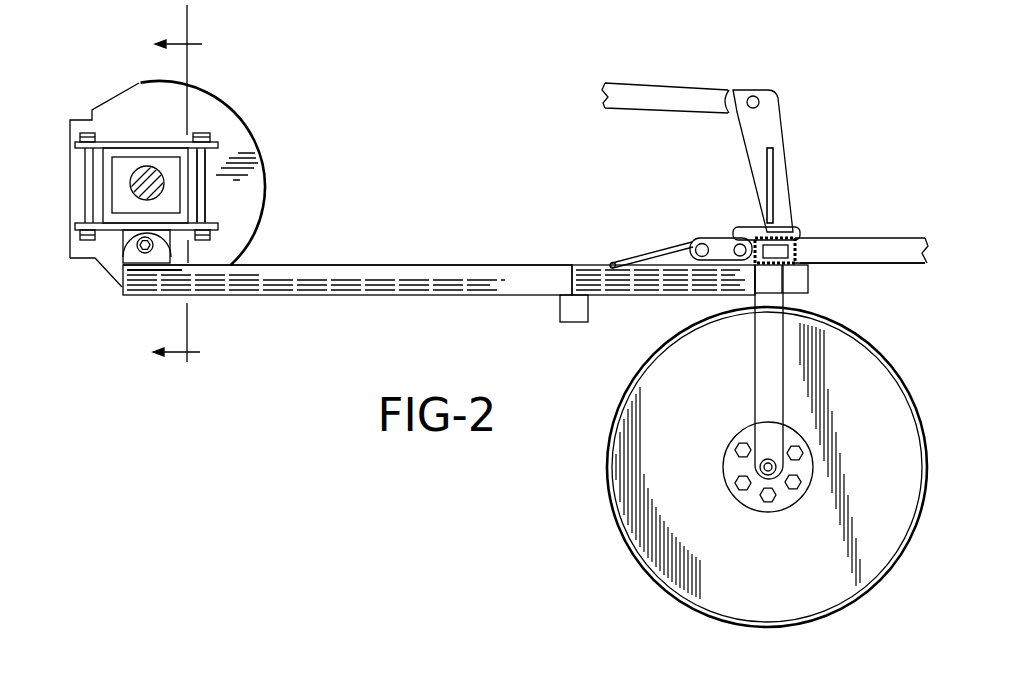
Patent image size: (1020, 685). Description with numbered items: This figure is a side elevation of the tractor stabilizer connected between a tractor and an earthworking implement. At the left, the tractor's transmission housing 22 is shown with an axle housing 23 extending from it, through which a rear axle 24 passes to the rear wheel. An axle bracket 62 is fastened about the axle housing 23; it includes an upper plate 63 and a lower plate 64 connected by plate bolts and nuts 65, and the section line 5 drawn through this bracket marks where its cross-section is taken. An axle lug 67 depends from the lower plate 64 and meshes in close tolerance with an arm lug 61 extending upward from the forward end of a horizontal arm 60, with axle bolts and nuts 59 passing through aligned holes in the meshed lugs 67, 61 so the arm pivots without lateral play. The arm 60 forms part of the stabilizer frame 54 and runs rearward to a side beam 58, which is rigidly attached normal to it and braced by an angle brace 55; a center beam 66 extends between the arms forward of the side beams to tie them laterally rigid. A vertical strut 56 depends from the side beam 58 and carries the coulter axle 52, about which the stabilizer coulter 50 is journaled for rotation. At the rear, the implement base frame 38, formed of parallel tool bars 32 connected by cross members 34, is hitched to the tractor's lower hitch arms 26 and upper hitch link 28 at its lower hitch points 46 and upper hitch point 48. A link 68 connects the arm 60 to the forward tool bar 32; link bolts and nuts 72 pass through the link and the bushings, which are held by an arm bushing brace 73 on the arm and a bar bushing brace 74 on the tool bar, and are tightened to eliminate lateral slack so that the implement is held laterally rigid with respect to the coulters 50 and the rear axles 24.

The section line 5- 5 is at (186, 185).
The transmission housing 22 is at (198, 108).
The axle housings 23 is at (138, 160).
The rear axles 24 is at (165, 176).
The lower hitch arms 26 is at (655, 253).
The upper hitch link 28 is at (642, 95).
The parallel tool bars 32 is at (796, 240).
The cross members 34 is at (866, 245).
The base frame 38 is at (880, 262).
The lower hitch points 46 is at (747, 232).
The upper hitch point 48 is at (750, 98).
The stabilizer coulter 50 is at (675, 362).
The coulter axle 52 is at (758, 486).
The stabilizer frame 54 is at (458, 255).
The angle braces 55 is at (652, 296).
The struts 56 is at (766, 340).
The side beams 58 is at (770, 278).
The axle bolts and nuts 59 is at (153, 246).
The arms 60 is at (510, 283).
The arm lugs 61 is at (118, 284).
The axle brackets 62 is at (163, 101).
The upper plate 63 is at (106, 148).
The lower plate 64 is at (208, 204).
The plate bolts and nuts 65 is at (89, 133).
The center beam 66 is at (582, 312).
The axle lugs 67 is at (126, 238).
The links 68 is at (704, 238).
The link bolts and nuts 72 is at (710, 258).
The arm bushing braces 73 is at (613, 260).
The bar bushing braces 74 is at (750, 258).